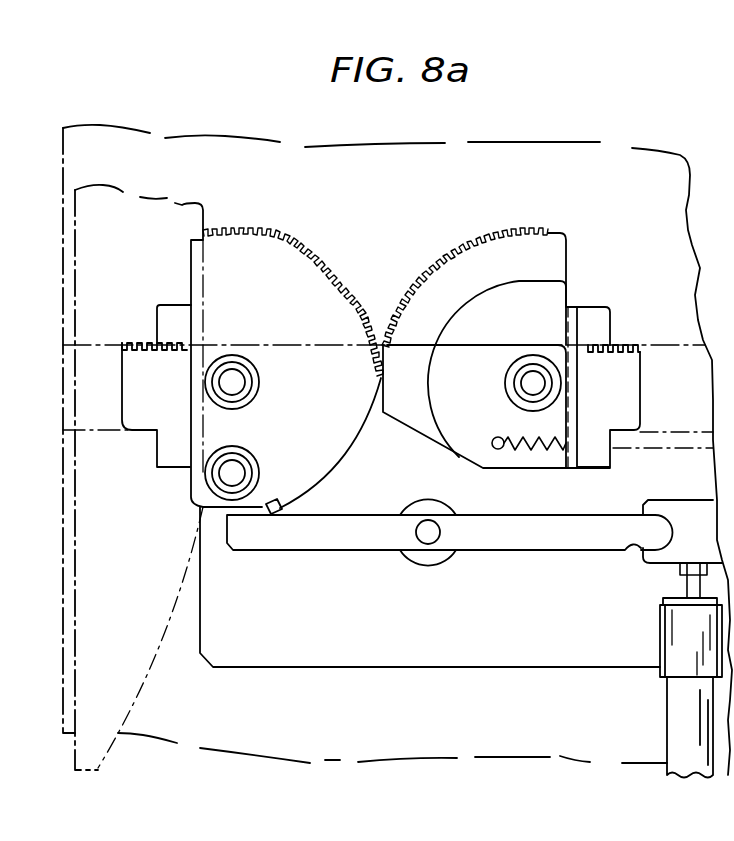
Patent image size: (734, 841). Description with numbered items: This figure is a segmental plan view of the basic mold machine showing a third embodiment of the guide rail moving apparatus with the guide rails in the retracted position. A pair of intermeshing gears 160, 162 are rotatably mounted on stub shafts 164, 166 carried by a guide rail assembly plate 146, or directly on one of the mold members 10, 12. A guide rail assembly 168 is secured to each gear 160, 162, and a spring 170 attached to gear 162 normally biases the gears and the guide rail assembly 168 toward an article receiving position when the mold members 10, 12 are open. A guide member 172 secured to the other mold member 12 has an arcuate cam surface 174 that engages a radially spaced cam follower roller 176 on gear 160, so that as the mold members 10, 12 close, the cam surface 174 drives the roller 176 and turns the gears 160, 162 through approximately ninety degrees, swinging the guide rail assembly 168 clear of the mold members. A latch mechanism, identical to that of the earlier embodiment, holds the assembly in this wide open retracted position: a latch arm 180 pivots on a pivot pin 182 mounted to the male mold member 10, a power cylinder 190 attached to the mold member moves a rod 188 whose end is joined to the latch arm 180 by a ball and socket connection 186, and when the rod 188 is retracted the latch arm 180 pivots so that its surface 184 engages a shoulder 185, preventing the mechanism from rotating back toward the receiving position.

The male mold member 10 is at (475, 714).
The mold member 12 is at (370, 163).
The guide rail assembly plate 146 is at (360, 650).
The gear 160 is at (277, 265).
The gear 162 is at (547, 247).
The stub shaft 164 is at (232, 376).
The stub shaft 166 is at (527, 378).
The guide rail assembly 168 is at (122, 367).
The spring 170 is at (517, 440).
The guide member 172 is at (183, 202).
The arcuate cam surface 174 is at (147, 685).
The cam follower roller 176 is at (245, 452).
The latch arm 180 is at (365, 538).
The pivot pin 182 is at (443, 557).
The surface 184 is at (262, 517).
The shoulder 185 is at (293, 487).
The ball and socket connection 186 is at (673, 527).
The rod 188 is at (687, 583).
The power cylinder 190 is at (667, 708).